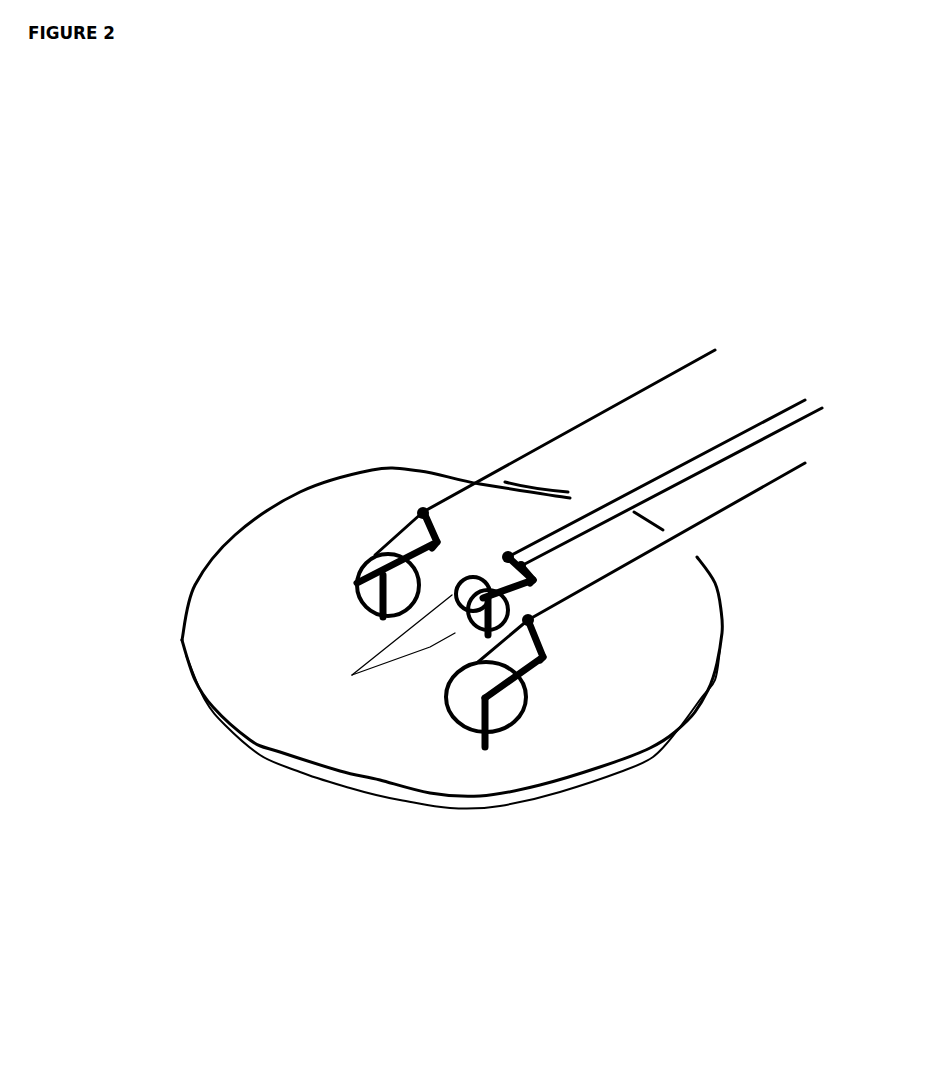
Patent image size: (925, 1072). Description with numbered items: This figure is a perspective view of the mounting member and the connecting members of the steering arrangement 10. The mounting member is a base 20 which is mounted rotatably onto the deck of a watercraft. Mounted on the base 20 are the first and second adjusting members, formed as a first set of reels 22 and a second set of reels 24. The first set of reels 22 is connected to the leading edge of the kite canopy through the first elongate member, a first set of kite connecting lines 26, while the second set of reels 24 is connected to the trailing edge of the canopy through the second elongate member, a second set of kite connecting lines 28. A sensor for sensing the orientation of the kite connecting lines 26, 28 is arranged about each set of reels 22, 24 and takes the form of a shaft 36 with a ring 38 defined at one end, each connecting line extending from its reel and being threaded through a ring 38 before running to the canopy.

The steering arrangement 10 is at (309, 890).
The base 20 is at (678, 735).
The first set of reels 22 is at (352, 675).
The second set of reels 24 is at (353, 573).
The first set of kite connecting lines 26 is at (715, 445).
The second set of kite connecting lines 28 is at (638, 388).
The shaft 36 is at (447, 558).
The ring 38 is at (420, 500).